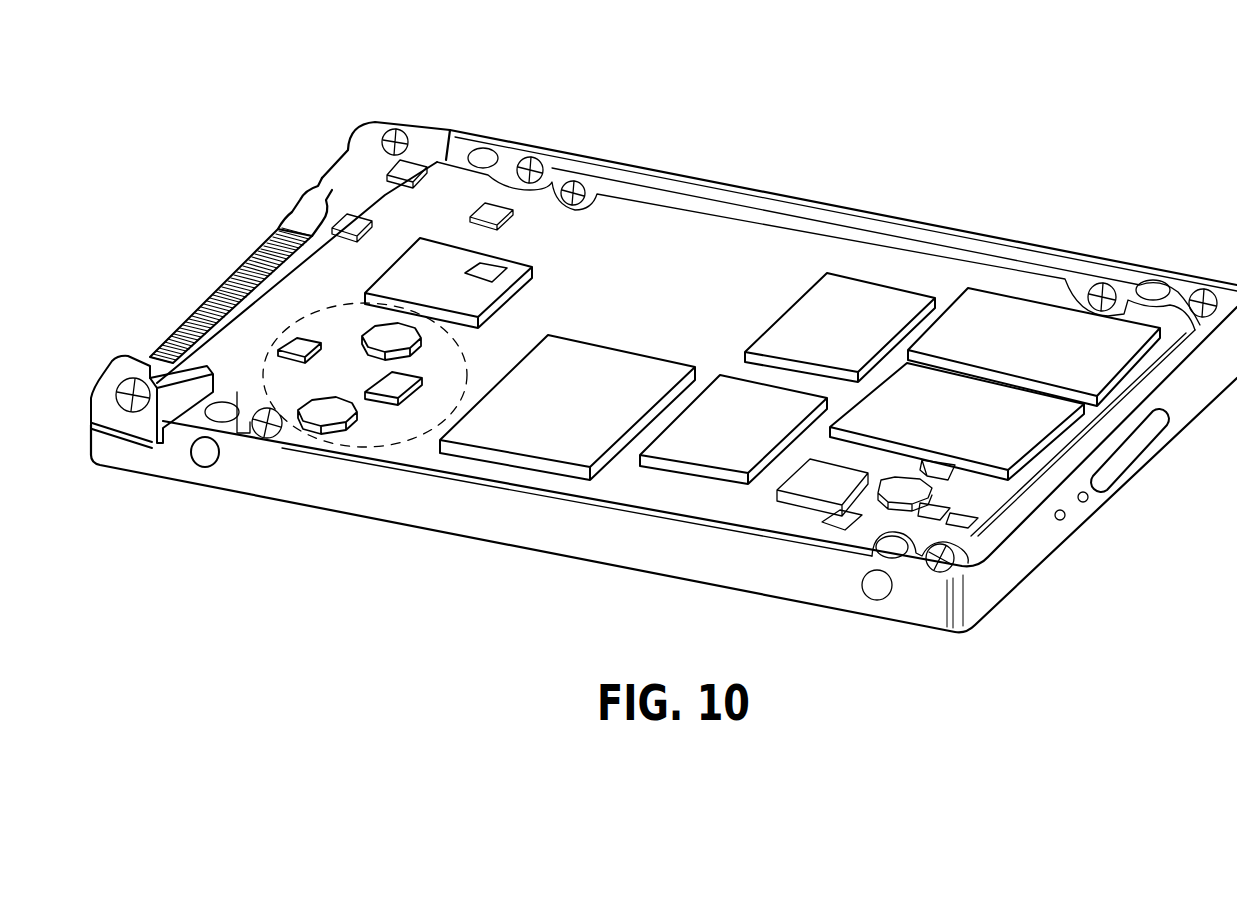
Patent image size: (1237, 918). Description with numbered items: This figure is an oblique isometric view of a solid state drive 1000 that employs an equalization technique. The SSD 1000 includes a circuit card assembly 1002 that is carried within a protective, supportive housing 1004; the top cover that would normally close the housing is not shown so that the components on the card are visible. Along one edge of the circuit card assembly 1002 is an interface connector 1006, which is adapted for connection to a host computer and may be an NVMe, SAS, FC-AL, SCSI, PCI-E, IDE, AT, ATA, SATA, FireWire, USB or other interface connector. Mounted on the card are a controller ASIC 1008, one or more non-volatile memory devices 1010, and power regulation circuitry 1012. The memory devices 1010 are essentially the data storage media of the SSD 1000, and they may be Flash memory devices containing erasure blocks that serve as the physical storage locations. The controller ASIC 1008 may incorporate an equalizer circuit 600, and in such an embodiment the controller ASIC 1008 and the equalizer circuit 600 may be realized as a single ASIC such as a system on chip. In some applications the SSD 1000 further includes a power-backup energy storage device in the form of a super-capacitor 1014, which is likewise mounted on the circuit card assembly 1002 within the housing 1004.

The solid state drive 1000 is at (893, 145).
The circuit card assembly 1002 is at (762, 233).
The housing 1004 is at (410, 524).
The interface connector 1006 is at (260, 257).
The controller ASIC 1008 is at (430, 280).
The equalizer circuit 600 is at (492, 266).
The non-volatile memory devices 1010 is at (1057, 343).
The power regulation circuitry 1012 is at (340, 447).
The super-capacitor 1014 is at (580, 410).